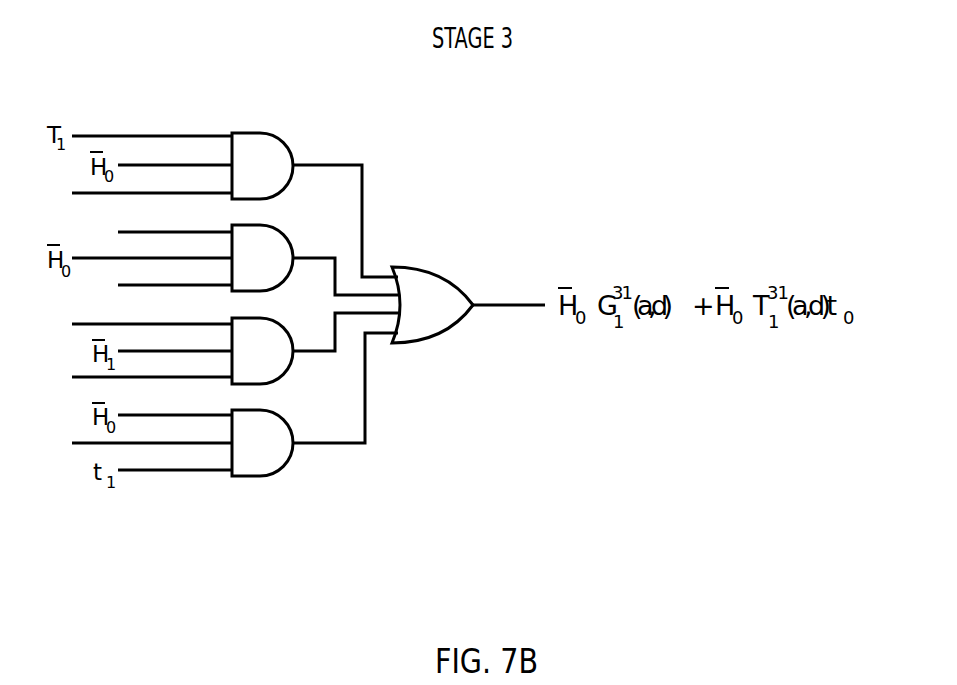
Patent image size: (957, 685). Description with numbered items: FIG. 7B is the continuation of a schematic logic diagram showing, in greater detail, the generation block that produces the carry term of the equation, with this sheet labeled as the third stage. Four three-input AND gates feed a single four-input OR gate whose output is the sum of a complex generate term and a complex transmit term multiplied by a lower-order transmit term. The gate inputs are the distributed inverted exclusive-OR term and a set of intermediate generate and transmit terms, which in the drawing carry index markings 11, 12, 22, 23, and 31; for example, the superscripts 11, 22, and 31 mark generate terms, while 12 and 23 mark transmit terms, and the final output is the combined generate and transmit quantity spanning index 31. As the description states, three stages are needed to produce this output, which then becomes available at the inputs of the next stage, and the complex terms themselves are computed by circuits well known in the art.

The AND gate stage input G1* 11 is at (215, 205).
The AND gate with T1^12 input 12 is at (242, 251).
The AND gate inputs G12* 22 is at (152, 270).
The AND gate with T1^23 input 23 is at (216, 355).
The AND gate with T1^31 input 31 is at (216, 404).